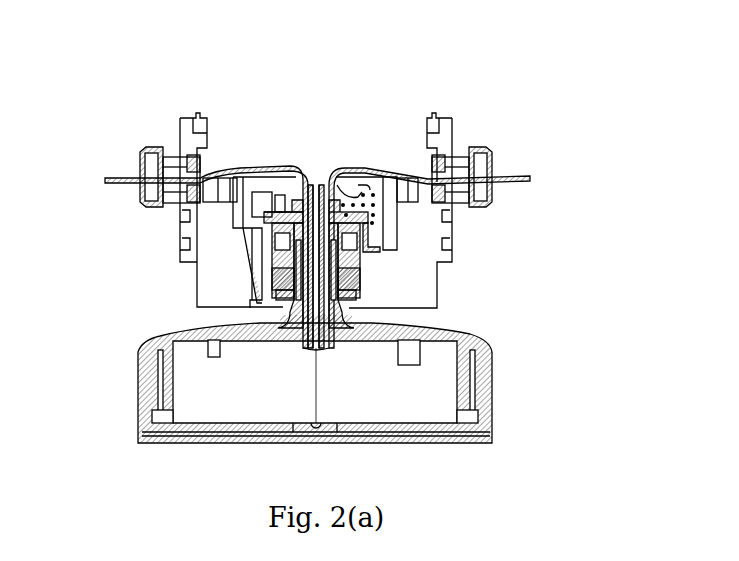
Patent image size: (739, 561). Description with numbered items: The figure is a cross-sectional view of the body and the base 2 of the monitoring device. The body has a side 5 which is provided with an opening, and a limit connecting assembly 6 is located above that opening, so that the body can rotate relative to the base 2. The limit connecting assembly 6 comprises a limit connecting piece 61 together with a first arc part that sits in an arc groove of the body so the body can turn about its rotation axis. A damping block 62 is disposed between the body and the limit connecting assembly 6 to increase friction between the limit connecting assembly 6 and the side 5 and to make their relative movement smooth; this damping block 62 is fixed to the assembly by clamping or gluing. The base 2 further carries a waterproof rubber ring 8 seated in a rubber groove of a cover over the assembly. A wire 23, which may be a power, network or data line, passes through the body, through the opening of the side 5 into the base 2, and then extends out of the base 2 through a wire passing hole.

The base 2 is at (435, 387).
The side 5 is at (435, 290).
The limit connecting assembly 6 is at (365, 270).
The waterproof rubber ring 8 is at (383, 225).
The wire 23 is at (343, 168).
The limit connecting piece 61 is at (262, 228).
The damping block 62 is at (267, 287).